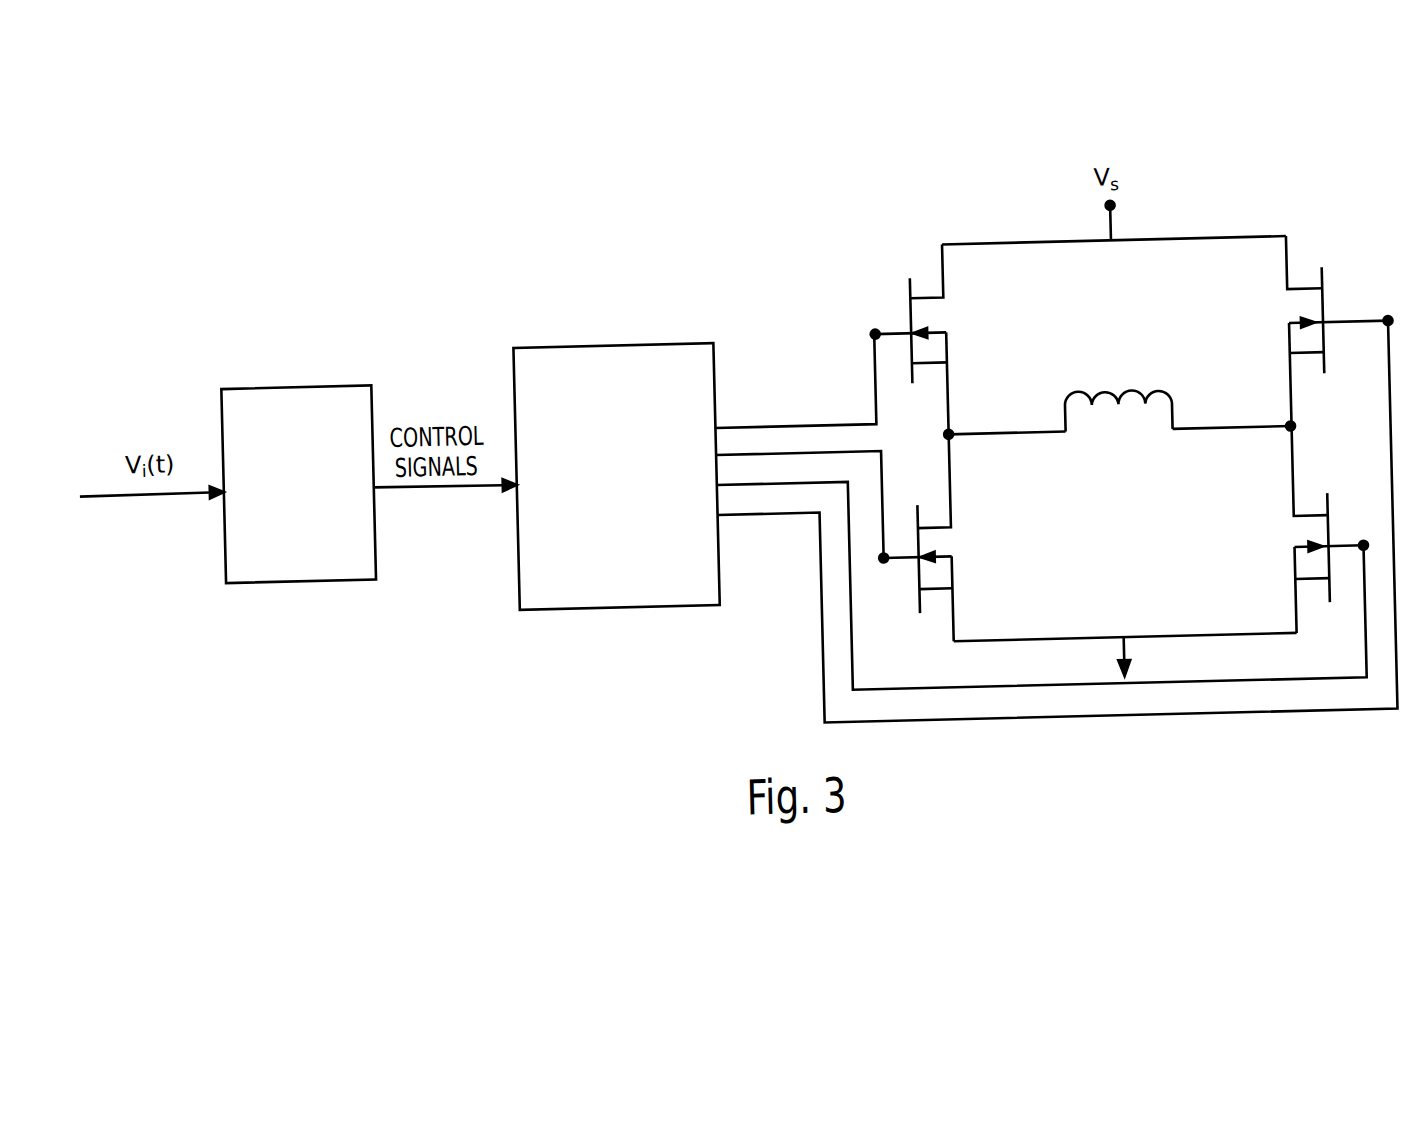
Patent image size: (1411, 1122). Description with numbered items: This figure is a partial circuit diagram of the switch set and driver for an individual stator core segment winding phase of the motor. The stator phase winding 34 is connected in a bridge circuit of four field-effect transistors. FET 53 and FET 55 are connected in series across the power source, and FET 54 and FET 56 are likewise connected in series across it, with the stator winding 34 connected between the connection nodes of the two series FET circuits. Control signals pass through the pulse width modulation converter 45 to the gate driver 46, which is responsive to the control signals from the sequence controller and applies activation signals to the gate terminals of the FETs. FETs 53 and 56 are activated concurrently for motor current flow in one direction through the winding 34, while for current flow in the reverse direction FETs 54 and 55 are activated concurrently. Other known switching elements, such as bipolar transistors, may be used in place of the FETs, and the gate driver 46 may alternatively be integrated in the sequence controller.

The pulse width modulation converter 45 is at (297, 375).
The gate driver 46 is at (661, 603).
The FET 53 is at (914, 311).
The FET 54 is at (1326, 306).
The FET 55 is at (916, 603).
The FET 56 is at (1326, 603).
The stator phase winding 34 is at (1106, 399).